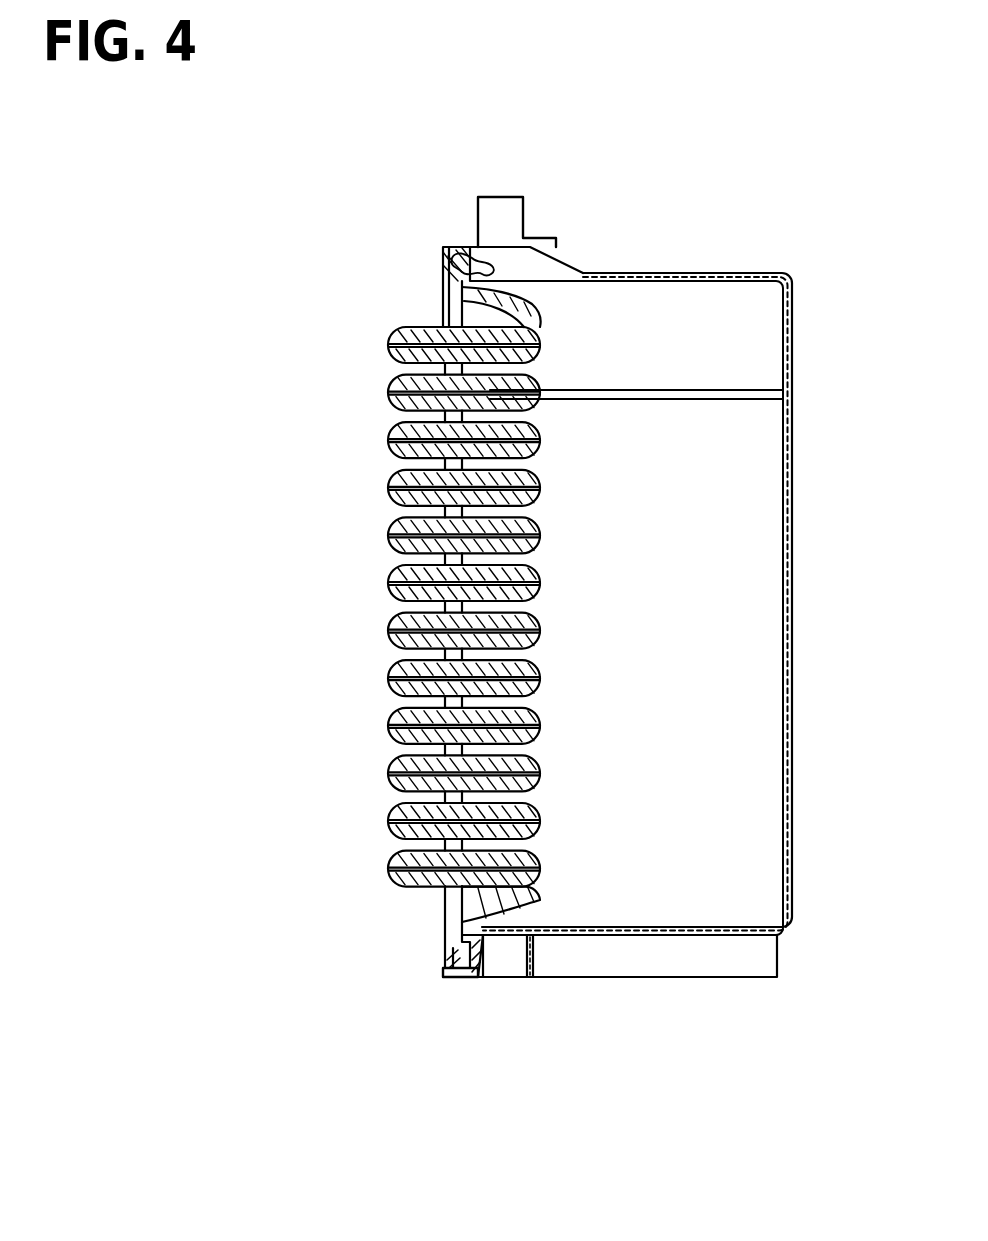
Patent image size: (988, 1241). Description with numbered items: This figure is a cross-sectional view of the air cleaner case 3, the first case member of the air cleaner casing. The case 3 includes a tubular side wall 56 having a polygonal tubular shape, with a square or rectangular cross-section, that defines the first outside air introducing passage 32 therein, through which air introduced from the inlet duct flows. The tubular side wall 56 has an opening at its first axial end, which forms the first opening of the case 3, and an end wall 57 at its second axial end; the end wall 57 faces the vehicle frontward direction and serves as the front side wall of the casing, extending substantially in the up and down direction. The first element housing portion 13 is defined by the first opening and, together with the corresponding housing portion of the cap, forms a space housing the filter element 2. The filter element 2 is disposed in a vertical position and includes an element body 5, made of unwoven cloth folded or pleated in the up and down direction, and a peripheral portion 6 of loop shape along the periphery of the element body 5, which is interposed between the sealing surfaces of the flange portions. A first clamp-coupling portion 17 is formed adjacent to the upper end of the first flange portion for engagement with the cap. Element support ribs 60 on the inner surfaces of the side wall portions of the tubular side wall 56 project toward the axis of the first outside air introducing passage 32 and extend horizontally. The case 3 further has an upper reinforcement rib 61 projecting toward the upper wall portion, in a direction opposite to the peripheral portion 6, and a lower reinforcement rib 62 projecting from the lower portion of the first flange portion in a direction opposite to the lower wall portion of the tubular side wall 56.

The filter element 2 is at (389, 330).
The air cleaner case 3 is at (791, 273).
The element body 5 is at (390, 572).
The peripheral portion 6 is at (445, 952).
The first element housing portion 13 is at (456, 892).
The first clamp-coupling portion 17 is at (507, 197).
The first outside air introducing passage 32 is at (677, 628).
The tubular side wall 56 is at (657, 274).
The end wall 57 is at (793, 579).
The element support ribs 60 is at (713, 389).
The upper reinforcement rib 61 is at (487, 249).
The lower reinforcement rib 62 is at (448, 979).